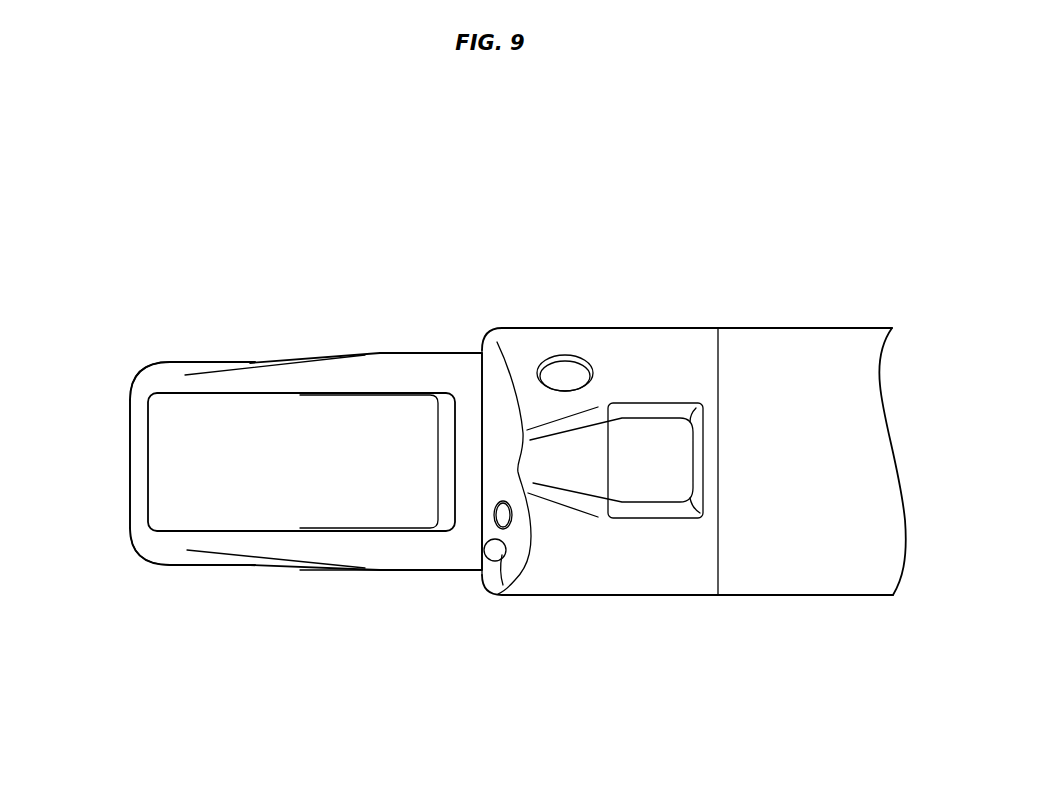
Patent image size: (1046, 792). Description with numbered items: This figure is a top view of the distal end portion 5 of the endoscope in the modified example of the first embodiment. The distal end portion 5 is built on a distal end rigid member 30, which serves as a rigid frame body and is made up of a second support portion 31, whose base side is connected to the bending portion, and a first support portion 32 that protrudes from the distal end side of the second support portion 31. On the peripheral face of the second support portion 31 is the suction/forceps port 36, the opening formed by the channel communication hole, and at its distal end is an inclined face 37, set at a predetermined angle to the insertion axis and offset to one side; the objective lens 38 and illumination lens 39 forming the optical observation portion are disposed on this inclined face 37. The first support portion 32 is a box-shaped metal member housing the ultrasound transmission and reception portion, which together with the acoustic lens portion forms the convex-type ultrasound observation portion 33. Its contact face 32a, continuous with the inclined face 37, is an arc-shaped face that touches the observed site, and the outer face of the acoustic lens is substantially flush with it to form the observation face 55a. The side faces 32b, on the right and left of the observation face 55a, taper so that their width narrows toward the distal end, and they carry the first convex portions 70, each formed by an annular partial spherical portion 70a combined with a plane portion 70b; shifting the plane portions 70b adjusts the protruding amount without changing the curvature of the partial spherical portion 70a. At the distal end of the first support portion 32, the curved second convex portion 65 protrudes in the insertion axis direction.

The distal end portion 5 is at (568, 265).
The distal end rigid member 30 is at (703, 714).
The second support portion 31 is at (895, 680).
The first support portion 32 is at (485, 680).
The contact face 32a is at (378, 552).
The side faces 32b is at (300, 357).
The convex-type ultrasound observation portion 33 is at (343, 302).
The suction/forceps port 36 is at (657, 452).
The inclined face 37 is at (497, 398).
The objective lens 38 is at (505, 518).
The illumination lens 39 is at (489, 558).
The observation face 55a is at (378, 415).
The second convex portion 65 is at (130, 442).
The first convex portions 70 is at (166, 352).
The partial spherical portion 70a is at (143, 367).
The plane portion 70b is at (197, 360).